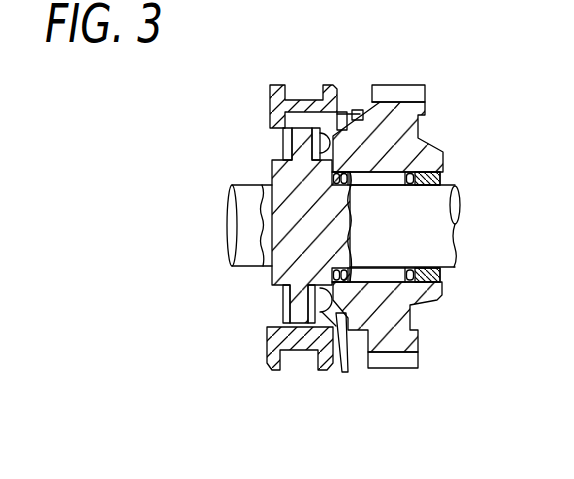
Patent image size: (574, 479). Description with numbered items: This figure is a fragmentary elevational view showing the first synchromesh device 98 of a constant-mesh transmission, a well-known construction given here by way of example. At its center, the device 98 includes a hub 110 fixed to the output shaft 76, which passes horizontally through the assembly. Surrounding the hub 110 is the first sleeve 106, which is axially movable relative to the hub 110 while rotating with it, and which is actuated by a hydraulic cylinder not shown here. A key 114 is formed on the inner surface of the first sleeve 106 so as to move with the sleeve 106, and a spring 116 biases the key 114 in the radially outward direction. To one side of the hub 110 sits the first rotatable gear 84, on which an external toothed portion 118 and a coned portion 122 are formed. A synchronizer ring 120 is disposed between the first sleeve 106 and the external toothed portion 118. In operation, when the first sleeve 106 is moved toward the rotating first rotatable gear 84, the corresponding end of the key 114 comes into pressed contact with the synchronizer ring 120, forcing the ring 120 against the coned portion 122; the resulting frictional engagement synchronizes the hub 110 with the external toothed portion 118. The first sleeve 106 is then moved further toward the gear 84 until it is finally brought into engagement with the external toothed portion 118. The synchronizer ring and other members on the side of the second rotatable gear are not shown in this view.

The output shaft 76 is at (450, 250).
The first rotatable gear 84 is at (405, 343).
The first synchromesh device 98 is at (271, 378).
The first sleeve 106 is at (267, 343).
The hub 110 is at (297, 302).
The key 114 is at (272, 122).
The spring 116 is at (283, 130).
The external toothed portion 118 is at (358, 109).
The synchronizer ring 120 is at (346, 372).
The coned portion 122 is at (360, 132).